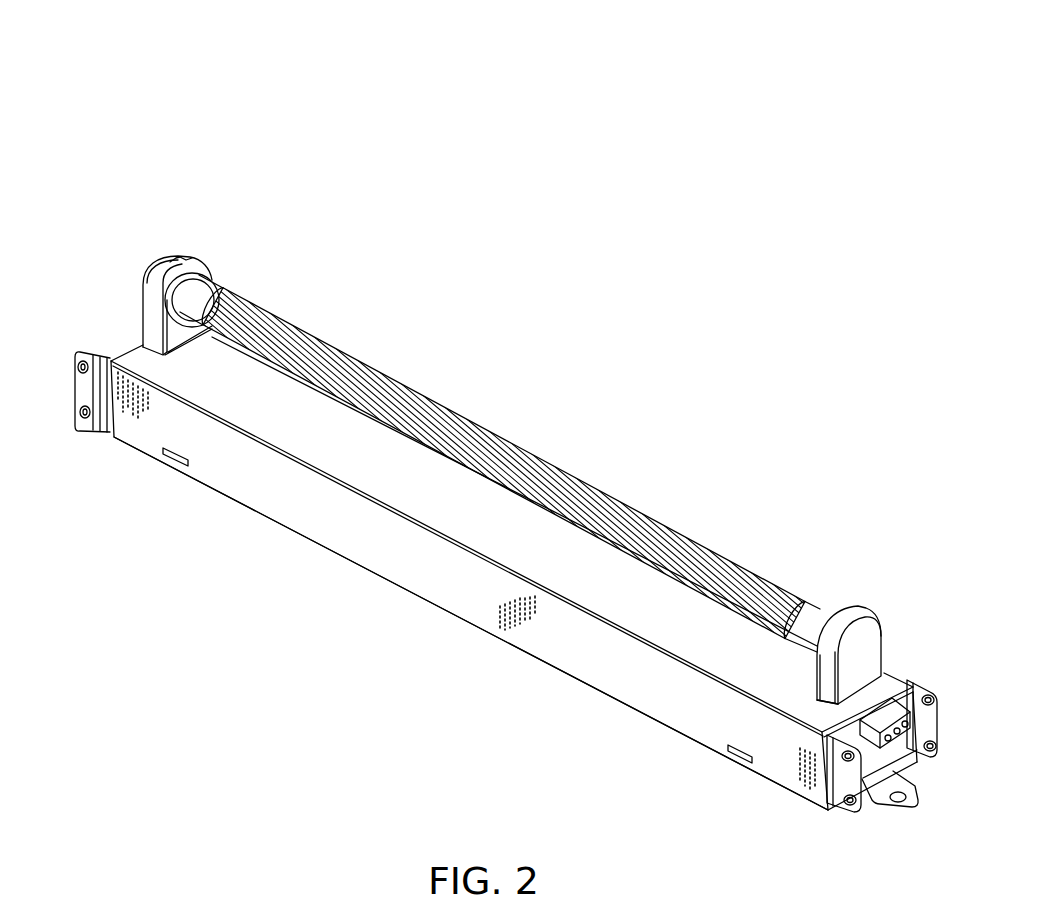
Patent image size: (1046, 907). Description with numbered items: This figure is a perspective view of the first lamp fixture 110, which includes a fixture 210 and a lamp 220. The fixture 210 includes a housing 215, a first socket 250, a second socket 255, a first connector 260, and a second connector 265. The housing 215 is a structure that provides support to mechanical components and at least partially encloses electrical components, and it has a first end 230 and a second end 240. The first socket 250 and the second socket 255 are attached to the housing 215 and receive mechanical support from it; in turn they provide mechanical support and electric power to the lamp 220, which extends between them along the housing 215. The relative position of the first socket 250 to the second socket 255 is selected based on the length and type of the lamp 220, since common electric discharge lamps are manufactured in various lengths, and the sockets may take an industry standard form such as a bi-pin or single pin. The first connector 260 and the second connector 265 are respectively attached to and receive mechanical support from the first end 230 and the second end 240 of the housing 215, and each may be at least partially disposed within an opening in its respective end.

The first lamp fixture 110 is at (375, 114).
The fixture 210 is at (443, 646).
The housing 215 is at (305, 512).
The lamp 220 is at (452, 412).
The first end 230 is at (95, 351).
The second end 240 is at (873, 765).
The first socket 250 is at (178, 259).
The second socket 255 is at (865, 637).
The first connector 260 is at (116, 322).
The second connector 265 is at (889, 700).